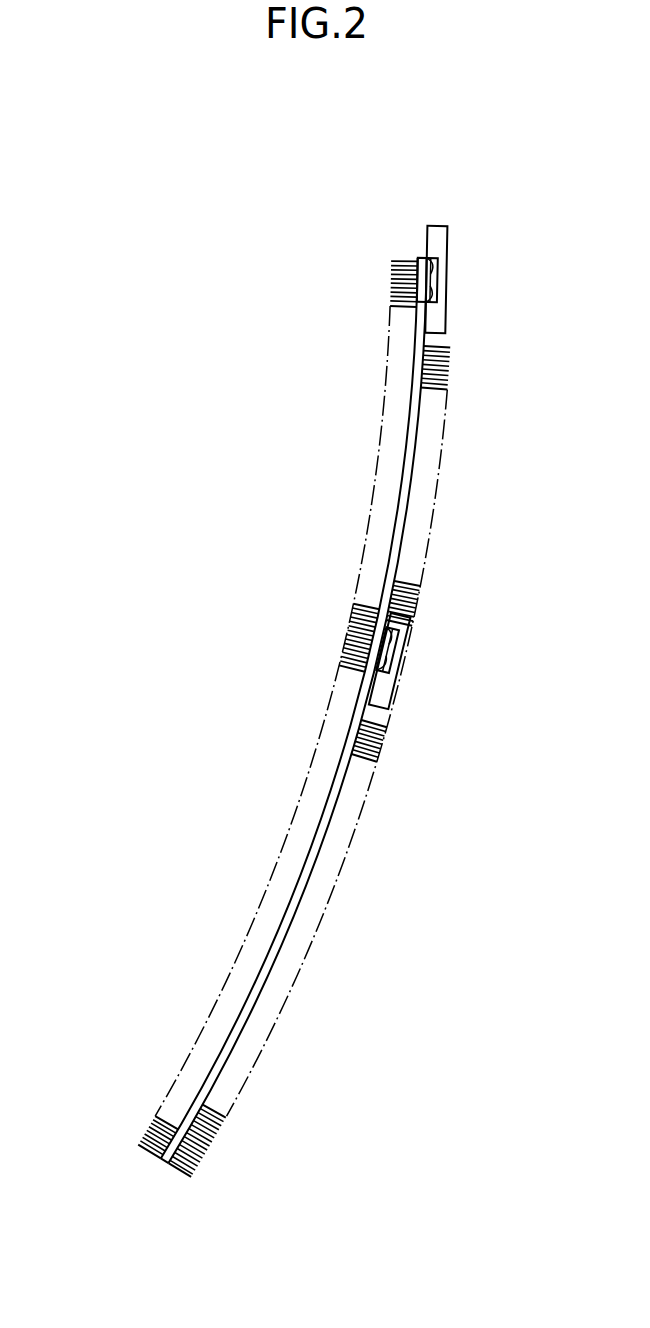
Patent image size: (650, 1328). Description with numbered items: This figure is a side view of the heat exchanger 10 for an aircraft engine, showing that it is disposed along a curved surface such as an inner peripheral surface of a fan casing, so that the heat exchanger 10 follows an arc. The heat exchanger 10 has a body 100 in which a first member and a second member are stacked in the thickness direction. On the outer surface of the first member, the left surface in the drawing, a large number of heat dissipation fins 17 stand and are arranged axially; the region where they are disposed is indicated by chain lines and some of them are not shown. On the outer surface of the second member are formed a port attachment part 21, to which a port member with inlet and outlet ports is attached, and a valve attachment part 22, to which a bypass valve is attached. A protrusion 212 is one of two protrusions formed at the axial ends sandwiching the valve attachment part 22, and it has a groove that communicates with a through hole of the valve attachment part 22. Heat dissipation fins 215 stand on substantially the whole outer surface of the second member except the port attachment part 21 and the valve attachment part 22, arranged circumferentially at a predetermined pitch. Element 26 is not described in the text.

The heat exchanger 10 is at (480, 198).
The body 100 is at (215, 1174).
The port attachment part 21 is at (446, 314).
The first connector 26 is at (440, 280).
The valve attachment part 22 is at (392, 697).
The protrusion 212 is at (400, 652).
The heat dissipation fins 17 is at (140, 1128).
The heat dissipation fins 215 is at (222, 1140).